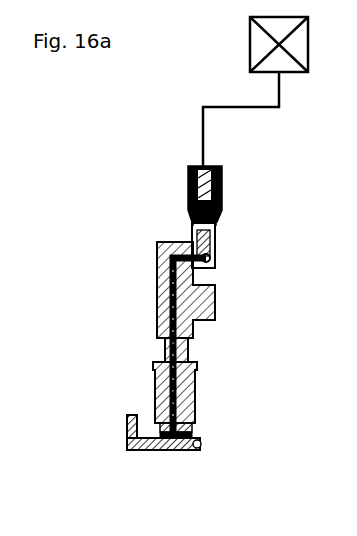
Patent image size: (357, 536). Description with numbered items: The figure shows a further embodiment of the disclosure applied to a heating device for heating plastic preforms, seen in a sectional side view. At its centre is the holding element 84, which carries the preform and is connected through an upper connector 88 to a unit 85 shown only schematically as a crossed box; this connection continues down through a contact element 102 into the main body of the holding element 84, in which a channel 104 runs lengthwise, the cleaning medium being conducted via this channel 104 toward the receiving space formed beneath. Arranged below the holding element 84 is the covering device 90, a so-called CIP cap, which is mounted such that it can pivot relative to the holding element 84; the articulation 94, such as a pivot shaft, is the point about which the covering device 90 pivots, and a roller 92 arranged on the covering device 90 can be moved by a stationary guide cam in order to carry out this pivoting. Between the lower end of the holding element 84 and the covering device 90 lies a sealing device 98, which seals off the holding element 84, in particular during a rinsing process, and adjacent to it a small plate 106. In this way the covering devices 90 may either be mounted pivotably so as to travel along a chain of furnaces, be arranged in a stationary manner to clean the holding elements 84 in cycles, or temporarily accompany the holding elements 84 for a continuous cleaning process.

The control unit 85 is at (258, 45).
The connector 88 is at (220, 203).
The contact element 102 is at (217, 252).
The channel 104 is at (157, 292).
The holding element 84 is at (128, 374).
The contact plate 106 is at (190, 433).
The covering device 90 is at (156, 459).
The articulation 94 is at (127, 432).
The sealing device 98 is at (195, 437).
The roller 92 is at (203, 446).